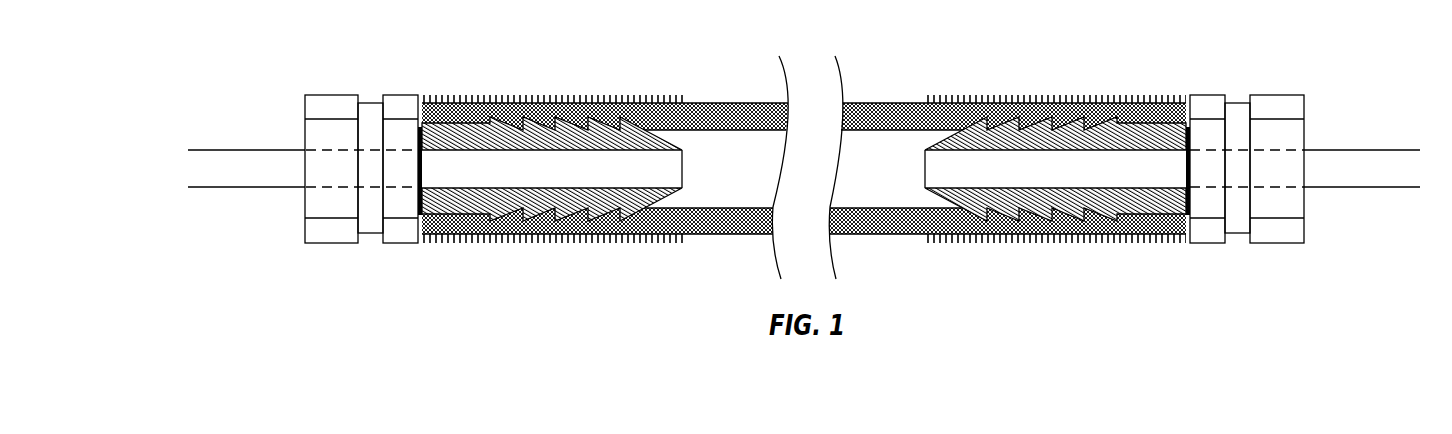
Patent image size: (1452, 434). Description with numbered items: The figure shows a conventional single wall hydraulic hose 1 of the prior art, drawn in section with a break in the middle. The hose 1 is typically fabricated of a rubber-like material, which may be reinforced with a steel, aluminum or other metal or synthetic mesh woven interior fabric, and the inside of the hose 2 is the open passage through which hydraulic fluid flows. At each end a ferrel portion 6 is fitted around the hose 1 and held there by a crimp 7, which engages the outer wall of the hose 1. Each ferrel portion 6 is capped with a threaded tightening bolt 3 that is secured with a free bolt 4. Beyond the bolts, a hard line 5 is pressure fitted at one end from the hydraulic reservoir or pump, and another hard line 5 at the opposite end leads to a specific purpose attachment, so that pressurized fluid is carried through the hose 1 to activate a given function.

The single wall hydraulic hose 1 is at (880, 115).
The inside of the hose 2 is at (867, 192).
The threaded tightening bolt 3 is at (397, 95).
The free bolt 4 is at (332, 95).
The hard line 5 is at (275, 188).
The ferrel portion 6 is at (630, 137).
The crimp 7 is at (540, 95).